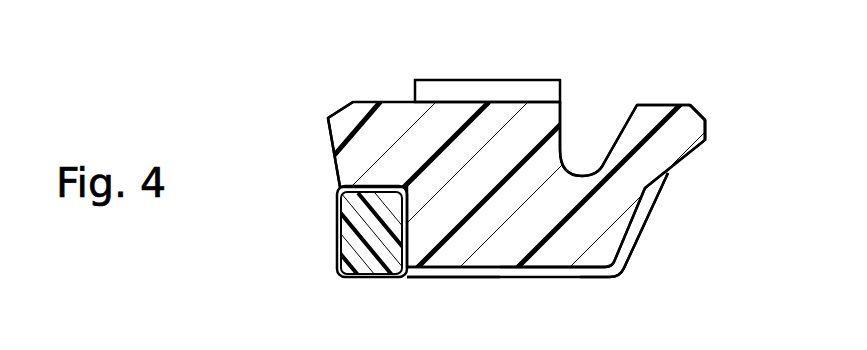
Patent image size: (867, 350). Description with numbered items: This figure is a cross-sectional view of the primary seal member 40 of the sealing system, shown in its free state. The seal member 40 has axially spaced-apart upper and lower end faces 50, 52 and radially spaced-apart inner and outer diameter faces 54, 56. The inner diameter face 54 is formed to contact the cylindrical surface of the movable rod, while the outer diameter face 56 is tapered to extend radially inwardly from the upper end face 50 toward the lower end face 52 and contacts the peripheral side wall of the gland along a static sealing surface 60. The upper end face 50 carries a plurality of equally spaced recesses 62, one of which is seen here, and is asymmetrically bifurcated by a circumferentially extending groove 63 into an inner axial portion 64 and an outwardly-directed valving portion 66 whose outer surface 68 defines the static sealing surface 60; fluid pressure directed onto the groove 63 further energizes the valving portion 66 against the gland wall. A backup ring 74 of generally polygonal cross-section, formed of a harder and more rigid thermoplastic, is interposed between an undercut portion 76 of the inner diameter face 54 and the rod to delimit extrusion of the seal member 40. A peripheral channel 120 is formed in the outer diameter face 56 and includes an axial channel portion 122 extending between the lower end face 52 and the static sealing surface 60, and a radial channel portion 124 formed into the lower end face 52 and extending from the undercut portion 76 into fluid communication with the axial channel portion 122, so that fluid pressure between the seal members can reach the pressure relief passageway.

The primary seal member 40 is at (772, 69).
The upper end face 50 is at (498, 80).
The lower end face 52 is at (434, 280).
The inner diameter face 54 is at (330, 118).
The outer diameter face 56 is at (664, 177).
The static sealing surface 60 is at (704, 144).
The recess 62 is at (445, 86).
The groove 63 is at (600, 110).
The inner axial portion 64 is at (330, 140).
The valving portion 66 is at (660, 105).
The outer surface 68 is at (706, 125).
The backup ring 74 is at (338, 261).
The undercut portion 76 is at (338, 194).
The peripheral channel 120 is at (668, 273).
The axial channel portion 122 is at (659, 234).
The radial channel portion 124 is at (546, 290).